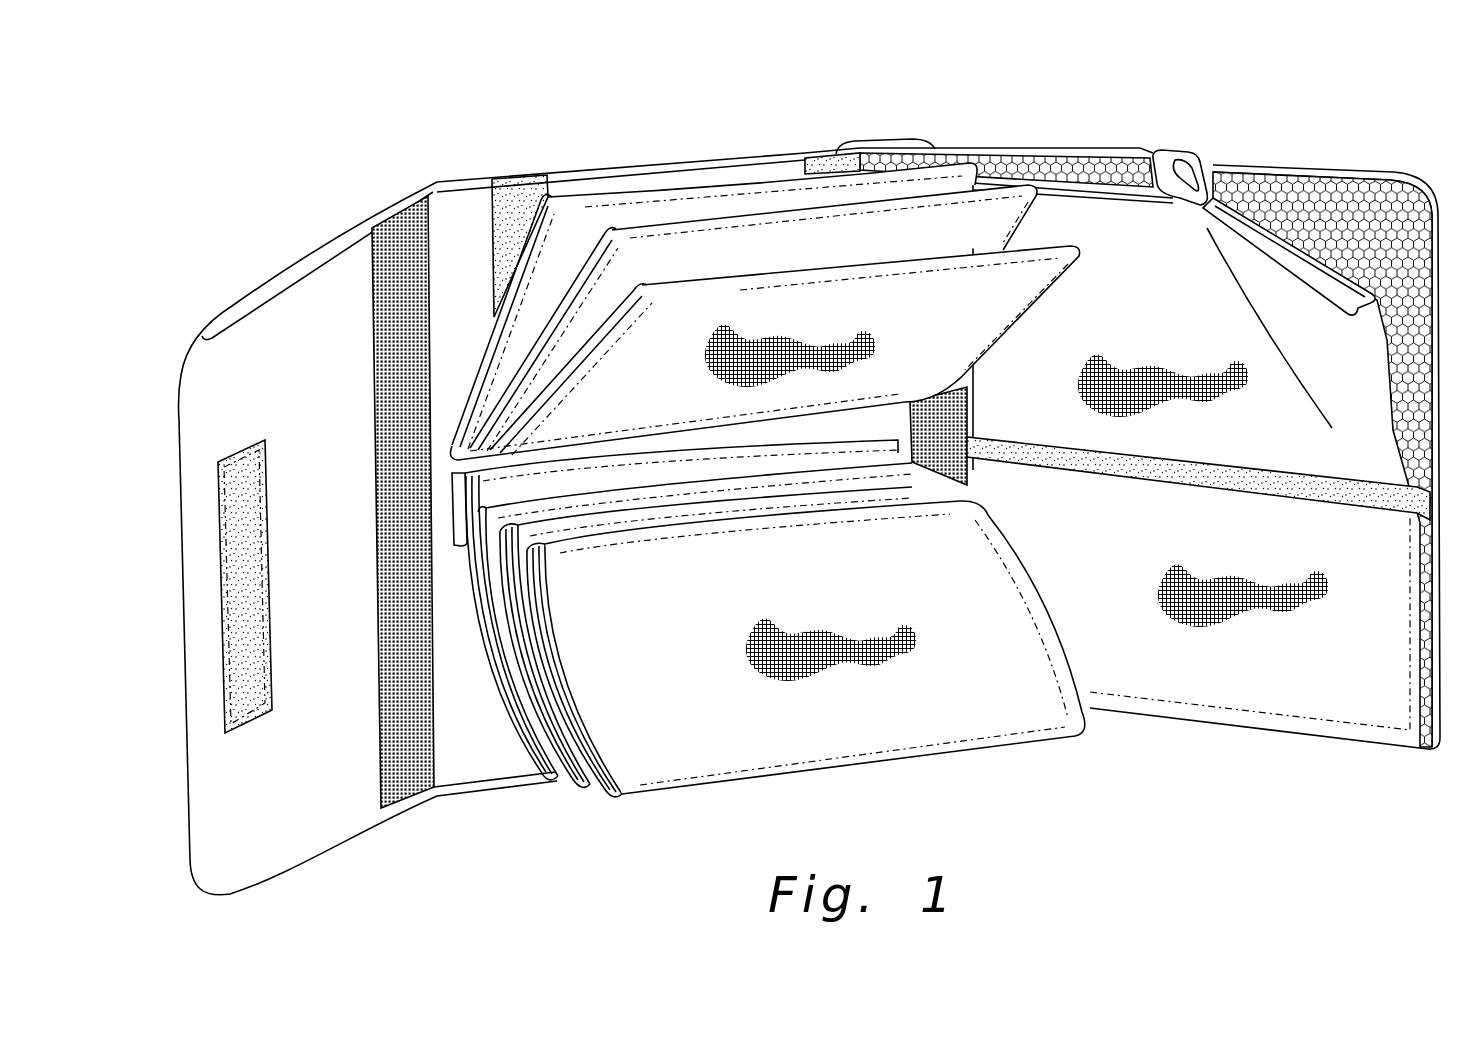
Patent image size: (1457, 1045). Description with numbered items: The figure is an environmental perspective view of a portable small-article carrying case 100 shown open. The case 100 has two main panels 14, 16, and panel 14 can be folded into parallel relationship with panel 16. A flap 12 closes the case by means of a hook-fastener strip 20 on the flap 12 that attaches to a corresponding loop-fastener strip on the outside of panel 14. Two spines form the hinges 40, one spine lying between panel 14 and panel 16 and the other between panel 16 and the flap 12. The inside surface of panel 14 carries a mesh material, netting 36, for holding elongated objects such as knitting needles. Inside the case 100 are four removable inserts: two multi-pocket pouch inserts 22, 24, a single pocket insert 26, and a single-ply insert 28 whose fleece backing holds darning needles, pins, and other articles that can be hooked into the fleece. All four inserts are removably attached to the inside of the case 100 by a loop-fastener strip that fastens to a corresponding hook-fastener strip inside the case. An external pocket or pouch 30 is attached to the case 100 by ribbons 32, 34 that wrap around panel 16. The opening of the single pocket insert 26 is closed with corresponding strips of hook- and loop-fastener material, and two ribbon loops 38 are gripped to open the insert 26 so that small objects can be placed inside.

The carrying case 100 is at (811, 483).
The flap 12 is at (303, 860).
The panel 14 is at (1273, 732).
The panel 16 is at (470, 783).
The hook-fastener strip 20 is at (247, 463).
The multi-pocket pouch insert 22 is at (940, 242).
The multi-pocket pouch insert 24 is at (701, 715).
The single pocket insert 26 is at (1352, 377).
The single-ply insert 28 is at (1358, 708).
The external pocket 30 is at (670, 162).
The ribbon 32 is at (836, 163).
The ribbon 34 is at (507, 210).
The netting 36 is at (1365, 200).
The ribbon loops 38 is at (1196, 165).
The hinges 40 is at (390, 795).